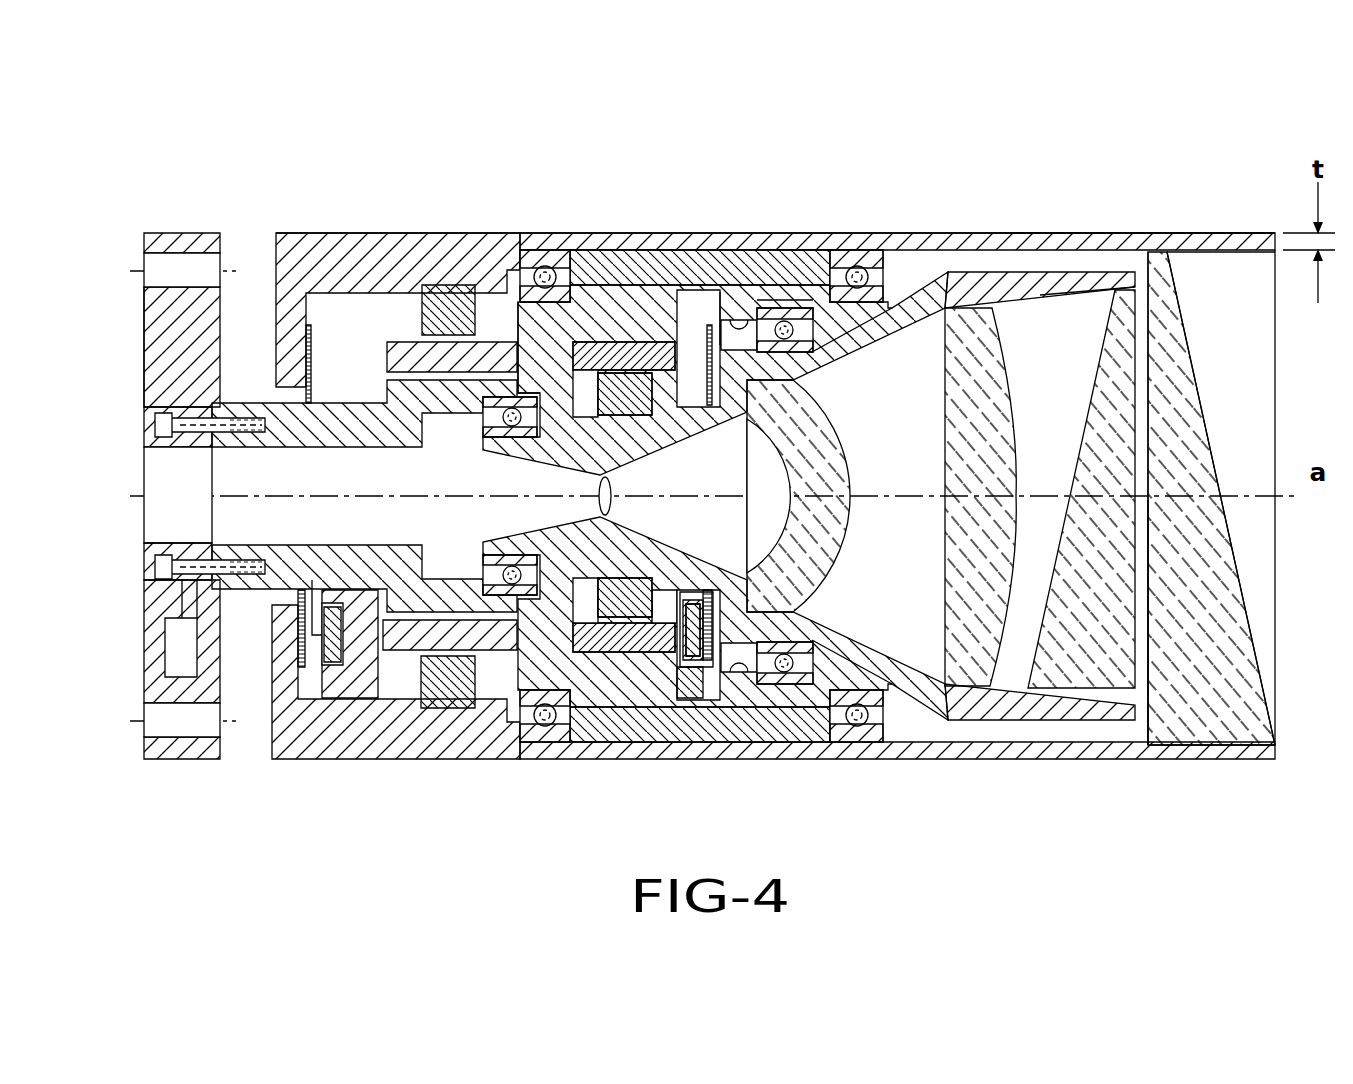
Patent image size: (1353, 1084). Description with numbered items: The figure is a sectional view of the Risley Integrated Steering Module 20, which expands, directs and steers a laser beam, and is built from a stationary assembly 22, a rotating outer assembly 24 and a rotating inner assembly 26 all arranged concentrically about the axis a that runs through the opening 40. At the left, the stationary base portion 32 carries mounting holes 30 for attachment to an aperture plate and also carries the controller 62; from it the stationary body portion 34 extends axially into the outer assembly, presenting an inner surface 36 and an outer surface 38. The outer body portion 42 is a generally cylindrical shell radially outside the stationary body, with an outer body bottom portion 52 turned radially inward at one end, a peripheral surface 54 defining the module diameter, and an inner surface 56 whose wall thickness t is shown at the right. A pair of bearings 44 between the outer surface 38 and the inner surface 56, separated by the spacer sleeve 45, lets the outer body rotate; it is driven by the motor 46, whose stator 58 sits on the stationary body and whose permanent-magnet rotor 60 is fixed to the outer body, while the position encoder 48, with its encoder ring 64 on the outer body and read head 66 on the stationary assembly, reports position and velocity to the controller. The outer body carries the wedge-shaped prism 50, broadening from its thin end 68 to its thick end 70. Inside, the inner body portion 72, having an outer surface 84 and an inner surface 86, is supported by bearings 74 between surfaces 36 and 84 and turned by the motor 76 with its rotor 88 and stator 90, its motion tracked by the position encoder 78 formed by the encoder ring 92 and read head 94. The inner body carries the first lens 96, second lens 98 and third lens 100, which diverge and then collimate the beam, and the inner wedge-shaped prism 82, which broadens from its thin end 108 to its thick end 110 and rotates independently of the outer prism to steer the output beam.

The Risley Integrated Steering Module 20 is at (186, 156).
The stationary assembly 22 is at (183, 228).
The rotating outer assembly 24 is at (930, 212).
The rotating inner assembly 26 is at (843, 362).
The mounting holes 30 is at (148, 266).
The stationary base portion 32 is at (148, 355).
The stationary body portion 34 is at (405, 555).
The inner surface 36 is at (775, 306).
The outer surface 38 is at (748, 322).
The opening 40 is at (160, 512).
The outer body portion 42 is at (890, 234).
The bearings 44 is at (545, 262).
The spacer sleeve 45 is at (592, 268).
The motor 46 is at (420, 678).
The position encoder 48 is at (352, 688).
The wedge-shaped prism 50 is at (1190, 470).
The outer body bottom portion 52 is at (280, 262).
The peripheral surface 54 is at (1108, 238).
The inner surface 56 is at (1225, 258).
The stator 58 is at (392, 345).
The rotor 60 is at (452, 305).
The controller 62 is at (180, 632).
The encoder ring 64 is at (300, 605).
The read head 66 is at (327, 655).
The thin end 68 is at (1202, 360).
The thick end 70 is at (1285, 722).
The inner body portion 72 is at (1030, 735).
The bearings 74 is at (493, 400).
The motor 76 is at (628, 625).
The position encoder 78 is at (700, 672).
The wedge-shaped prism 82 is at (1110, 425).
The outer surface 84 is at (1000, 270).
The inner surface 86 is at (1050, 290).
The rotor 88 is at (608, 355).
The stator 90 is at (697, 335).
The encoder ring 92 is at (702, 600).
The read head 94 is at (690, 612).
The first lens 96 is at (618, 488).
The second lens 98 is at (800, 560).
The third lens 100 is at (955, 482).
The thin end 108 is at (1150, 437).
The thick end 110 is at (1142, 628).